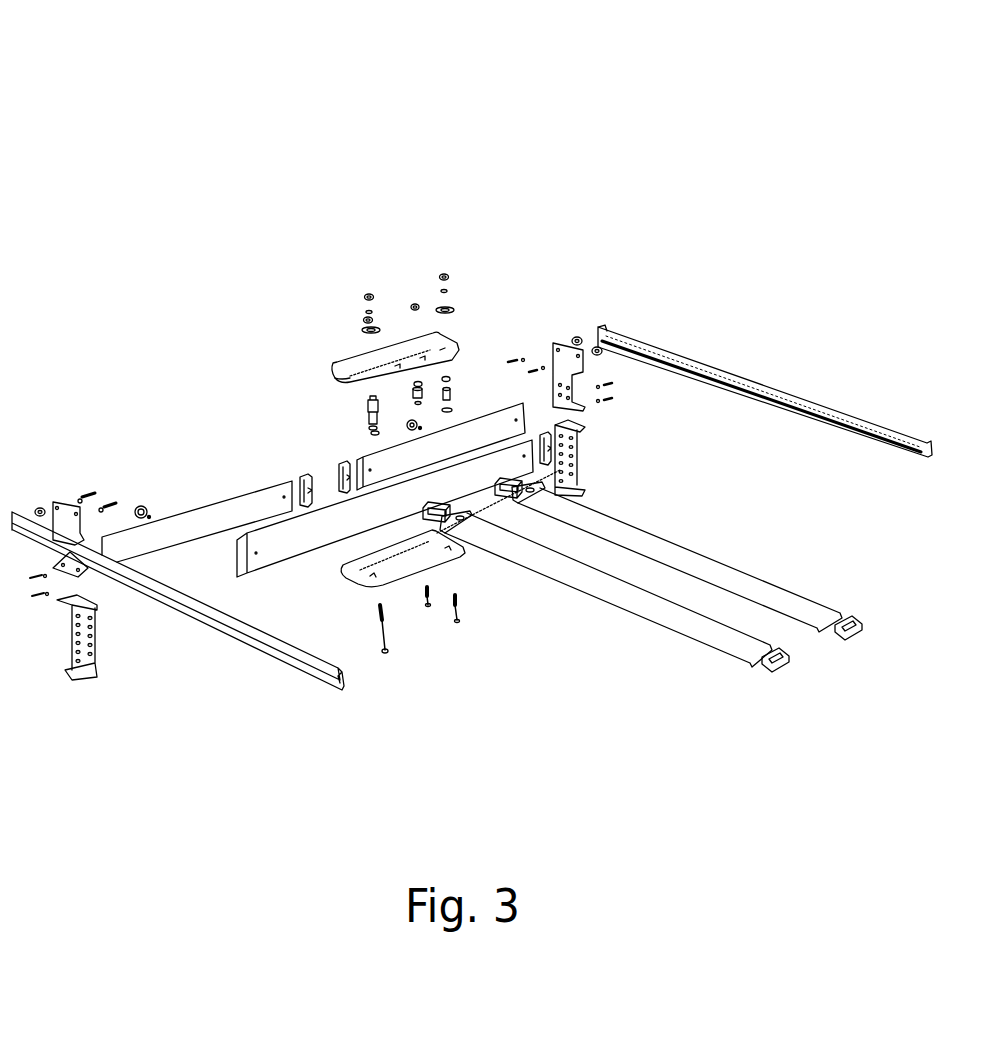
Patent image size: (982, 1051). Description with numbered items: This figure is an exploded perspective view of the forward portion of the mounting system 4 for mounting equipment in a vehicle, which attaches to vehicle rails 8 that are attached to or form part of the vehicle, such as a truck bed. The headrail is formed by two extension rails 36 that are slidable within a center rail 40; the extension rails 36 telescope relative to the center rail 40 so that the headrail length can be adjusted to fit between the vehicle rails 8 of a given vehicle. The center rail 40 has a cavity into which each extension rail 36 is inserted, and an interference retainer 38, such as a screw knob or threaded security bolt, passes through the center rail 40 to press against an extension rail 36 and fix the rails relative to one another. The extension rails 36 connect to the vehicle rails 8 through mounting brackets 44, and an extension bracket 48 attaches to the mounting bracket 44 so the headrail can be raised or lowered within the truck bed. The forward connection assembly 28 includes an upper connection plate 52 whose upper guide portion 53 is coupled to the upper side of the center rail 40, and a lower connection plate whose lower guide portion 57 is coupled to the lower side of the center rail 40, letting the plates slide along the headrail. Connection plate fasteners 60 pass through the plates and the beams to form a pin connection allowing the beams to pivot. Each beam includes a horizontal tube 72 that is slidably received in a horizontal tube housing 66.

The mounting system 4 is at (172, 98).
The vehicle rail 8 is at (672, 353).
The forward connection assembly 28 is at (397, 262).
The extension rail 36 is at (252, 500).
The interference retainer 38 is at (135, 502).
The center rail 40 is at (338, 523).
The mounting bracket 44 is at (67, 575).
The extension bracket 48 is at (77, 642).
The upper connection plate 52 is at (429, 340).
The upper guide portion 53 is at (356, 346).
The lower guide portion 57 is at (343, 583).
The connection plate fastener 60 is at (455, 623).
The horizontal tube housing 66 is at (560, 480).
The horizontal tube 72 is at (705, 568).